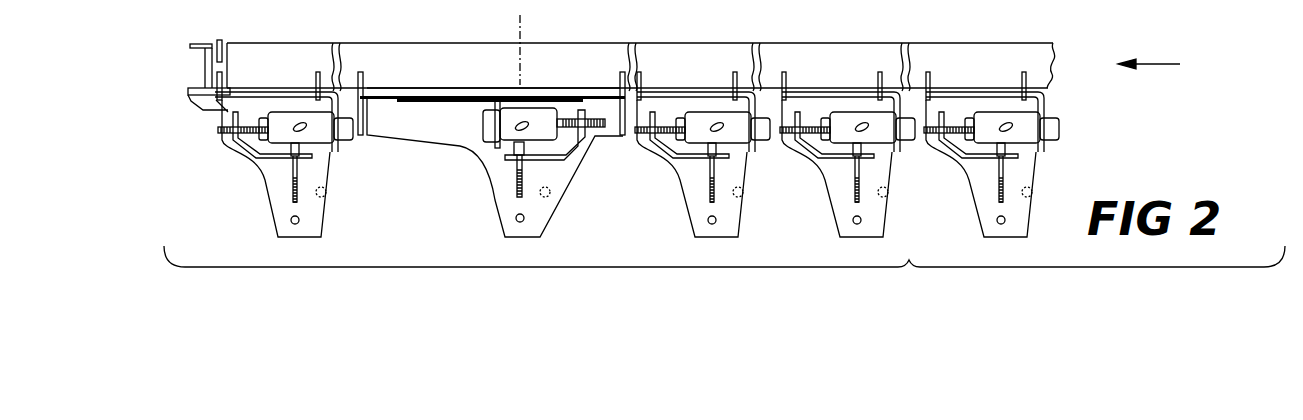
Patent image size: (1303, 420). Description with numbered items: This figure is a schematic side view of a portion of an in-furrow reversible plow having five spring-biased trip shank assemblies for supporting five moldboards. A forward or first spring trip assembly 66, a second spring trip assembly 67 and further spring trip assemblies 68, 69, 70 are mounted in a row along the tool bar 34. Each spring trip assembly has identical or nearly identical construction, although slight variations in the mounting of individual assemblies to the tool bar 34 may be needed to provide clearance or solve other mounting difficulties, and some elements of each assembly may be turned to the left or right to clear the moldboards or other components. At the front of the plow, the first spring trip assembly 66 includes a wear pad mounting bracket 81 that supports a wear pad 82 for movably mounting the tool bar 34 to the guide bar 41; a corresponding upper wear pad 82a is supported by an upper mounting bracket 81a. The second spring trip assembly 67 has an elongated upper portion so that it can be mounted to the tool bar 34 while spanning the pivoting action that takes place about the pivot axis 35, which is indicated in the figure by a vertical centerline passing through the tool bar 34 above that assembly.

The tool bar 34 is at (585, 52).
The pivot axis 35 is at (522, 20).
The guide bar 41 is at (207, 55).
The first spring trip assembly 66 is at (253, 189).
The second spring trip assembly 67 is at (476, 179).
The spring trip assembly 68 is at (681, 189).
The spring trip assembly 69 is at (823, 189).
The spring trip assembly 70 is at (951, 173).
The wear pad mounting bracket 81 is at (200, 105).
The upper mounting bracket 81a is at (222, 42).
The wear pad 82 is at (202, 91).
The upper wear pad 82a is at (204, 41).